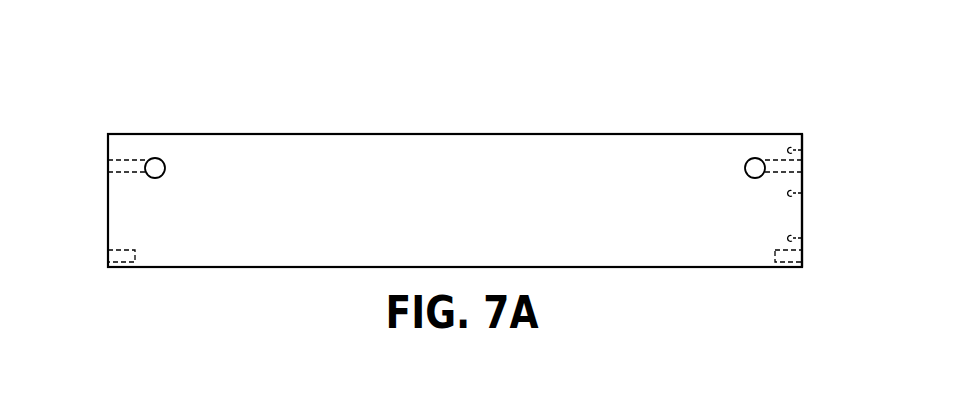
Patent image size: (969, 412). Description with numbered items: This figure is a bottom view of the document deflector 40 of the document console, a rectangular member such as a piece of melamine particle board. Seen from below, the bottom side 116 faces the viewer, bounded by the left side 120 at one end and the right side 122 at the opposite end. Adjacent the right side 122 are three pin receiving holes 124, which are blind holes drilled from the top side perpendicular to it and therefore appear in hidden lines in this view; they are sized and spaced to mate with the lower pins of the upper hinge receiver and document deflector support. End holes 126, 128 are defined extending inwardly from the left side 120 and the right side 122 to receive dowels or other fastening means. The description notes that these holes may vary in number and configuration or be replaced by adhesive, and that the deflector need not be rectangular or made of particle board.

The document deflector 40 is at (276, 89).
The bottom side 116 is at (452, 178).
The left side 120 is at (108, 193).
The right side 122 is at (803, 215).
The pin receiving holes 124 is at (804, 192).
The end holes 126 is at (120, 264).
The end holes 128 is at (131, 162).